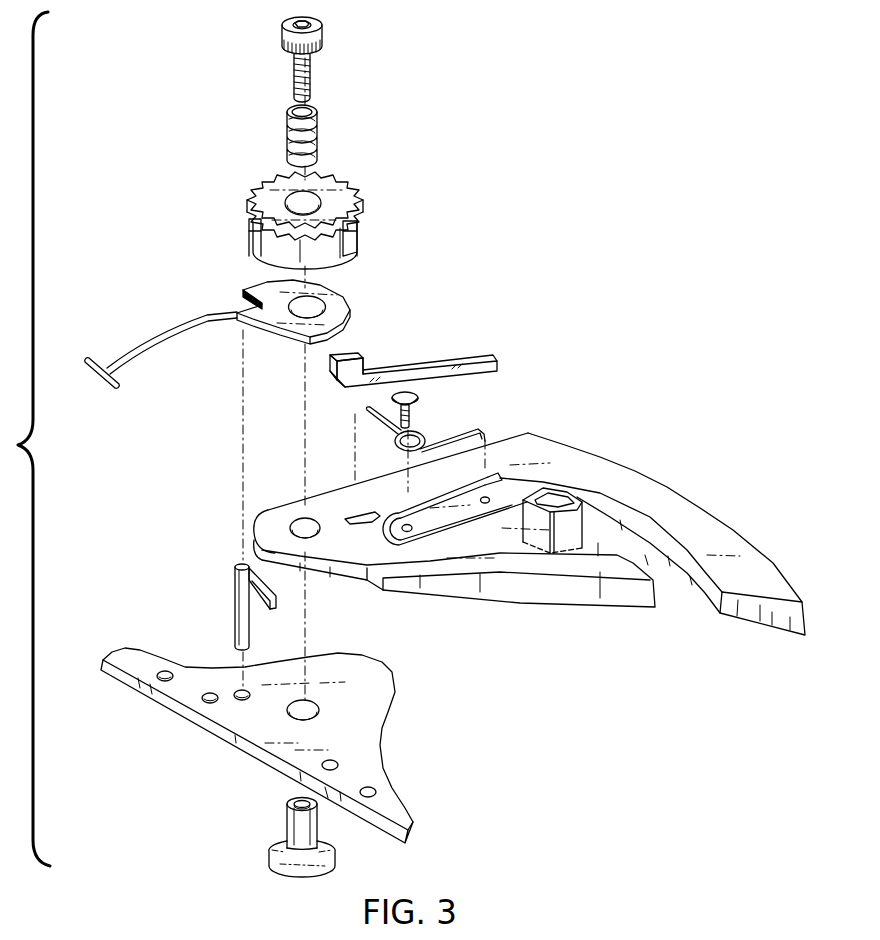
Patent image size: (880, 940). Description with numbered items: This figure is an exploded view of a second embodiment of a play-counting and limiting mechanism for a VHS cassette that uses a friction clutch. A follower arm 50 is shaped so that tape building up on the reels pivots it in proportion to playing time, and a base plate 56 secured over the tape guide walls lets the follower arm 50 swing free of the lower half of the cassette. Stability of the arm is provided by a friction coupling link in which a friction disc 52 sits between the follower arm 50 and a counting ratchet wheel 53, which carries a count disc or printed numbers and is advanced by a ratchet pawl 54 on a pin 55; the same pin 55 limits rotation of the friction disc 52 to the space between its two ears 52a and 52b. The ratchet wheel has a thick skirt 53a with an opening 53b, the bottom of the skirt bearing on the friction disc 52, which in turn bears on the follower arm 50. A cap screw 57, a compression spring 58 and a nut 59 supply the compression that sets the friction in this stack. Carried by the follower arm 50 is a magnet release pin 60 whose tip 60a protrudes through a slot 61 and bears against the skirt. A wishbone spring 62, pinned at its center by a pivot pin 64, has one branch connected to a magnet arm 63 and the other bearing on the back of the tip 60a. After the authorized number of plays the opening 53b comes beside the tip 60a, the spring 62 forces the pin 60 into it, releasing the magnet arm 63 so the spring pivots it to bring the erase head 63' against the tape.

The follower arm 50 is at (529, 527).
The friction disc 52 is at (240, 329).
The ear 52a is at (245, 296).
The ear 52b is at (236, 325).
The counting ratchet wheel 53 is at (299, 213).
The thick skirt 53a is at (252, 240).
The opening 53b is at (348, 262).
The ratchet pawl 54 is at (289, 631).
The pin 55 is at (232, 600).
The base plate 56 is at (365, 727).
The cap screw 57 is at (322, 48).
The compression spring 58 is at (318, 120).
The nut 59 is at (292, 825).
The magnet release pin 60 is at (381, 357).
The tip 60a is at (328, 366).
The slot 61 is at (372, 522).
The wishbone spring 62 is at (418, 437).
The magnet arm 63 is at (481, 482).
The erase head 63' is at (579, 495).
The pivot pin 64 is at (418, 399).